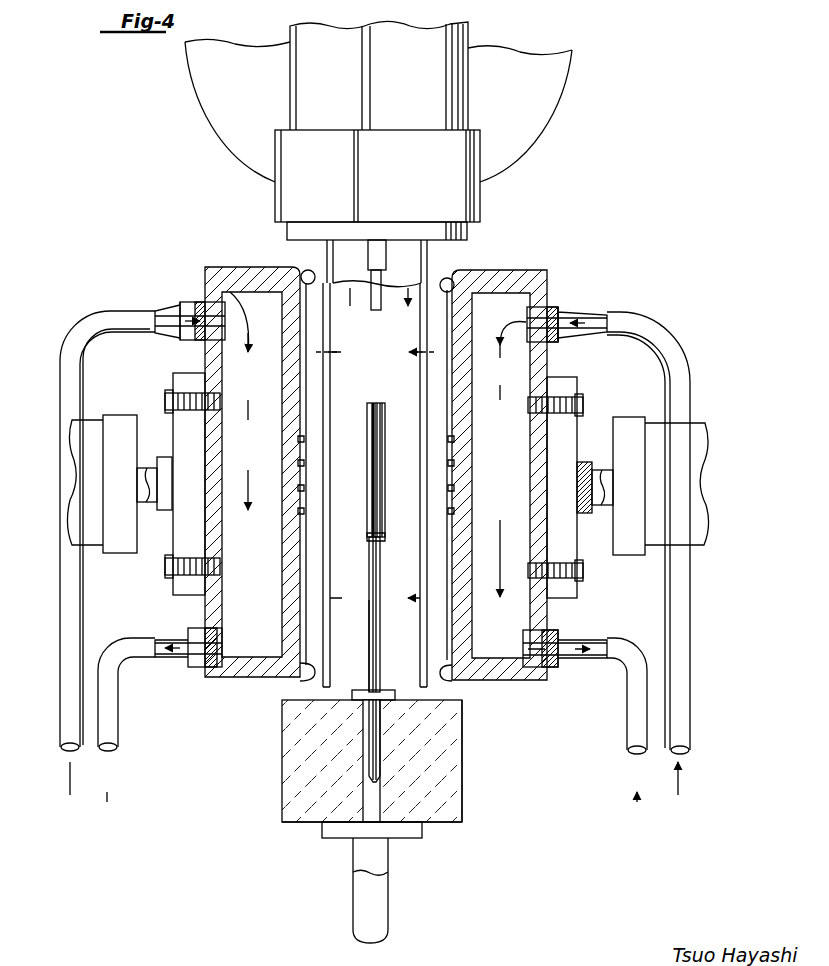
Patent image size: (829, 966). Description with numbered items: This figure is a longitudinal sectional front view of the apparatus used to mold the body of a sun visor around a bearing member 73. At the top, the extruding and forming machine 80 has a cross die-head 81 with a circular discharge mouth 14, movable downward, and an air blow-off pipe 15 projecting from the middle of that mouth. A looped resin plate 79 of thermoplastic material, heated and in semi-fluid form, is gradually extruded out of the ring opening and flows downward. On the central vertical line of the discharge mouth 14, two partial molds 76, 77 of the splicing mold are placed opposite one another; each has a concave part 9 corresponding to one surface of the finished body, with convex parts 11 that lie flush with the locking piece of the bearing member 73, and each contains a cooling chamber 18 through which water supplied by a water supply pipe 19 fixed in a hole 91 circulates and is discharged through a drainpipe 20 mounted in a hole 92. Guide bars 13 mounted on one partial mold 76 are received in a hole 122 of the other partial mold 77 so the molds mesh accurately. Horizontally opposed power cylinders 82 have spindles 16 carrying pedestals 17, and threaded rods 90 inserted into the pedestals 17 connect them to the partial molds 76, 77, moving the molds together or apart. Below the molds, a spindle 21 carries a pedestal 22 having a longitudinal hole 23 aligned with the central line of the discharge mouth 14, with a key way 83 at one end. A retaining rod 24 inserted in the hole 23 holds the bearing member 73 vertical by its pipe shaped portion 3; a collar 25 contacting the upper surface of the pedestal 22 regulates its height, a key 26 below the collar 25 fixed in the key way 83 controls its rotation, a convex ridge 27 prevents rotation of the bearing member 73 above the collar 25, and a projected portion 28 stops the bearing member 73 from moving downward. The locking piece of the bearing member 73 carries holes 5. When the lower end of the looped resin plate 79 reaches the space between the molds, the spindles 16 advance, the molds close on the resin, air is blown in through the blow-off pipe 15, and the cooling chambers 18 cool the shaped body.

The pipe shaped portion 3 is at (368, 458).
The holes 5 is at (390, 470).
The concave part 9 is at (308, 392).
The convex parts 11 is at (325, 447).
The guide bars 13 is at (303, 272).
The circular discharge mouth 14 is at (427, 255).
The air blow-off pipe 15 is at (380, 308).
The spindles 16 is at (150, 510).
The pedestals 17 is at (602, 604).
The cooling chamber 18 is at (228, 298).
The water supply pipe 19 is at (676, 304).
The drainpipe 20 is at (634, 722).
The spindle 21 is at (396, 890).
The pedestal 22 is at (282, 810).
The longitudinal hole 23 is at (470, 753).
The retaining rod 24 is at (368, 618).
The collar 25 is at (380, 692).
The key 26 is at (282, 753).
The convex ridge 27 is at (381, 575).
The projected portion 28 is at (367, 540).
The bearing member 73 is at (417, 508).
The partial mold 76 is at (272, 662).
The partial mold 77 is at (489, 572).
The resin plate 79 is at (318, 272).
The extruding and forming machine 80 is at (540, 92).
The cross die-head 81 is at (470, 236).
The power cylinders 82 is at (120, 416).
The key way 83 is at (393, 797).
The threaded rods 90 is at (608, 574).
The hole 91 is at (218, 352).
The hole 92 is at (210, 628).
The hole 122 is at (455, 270).